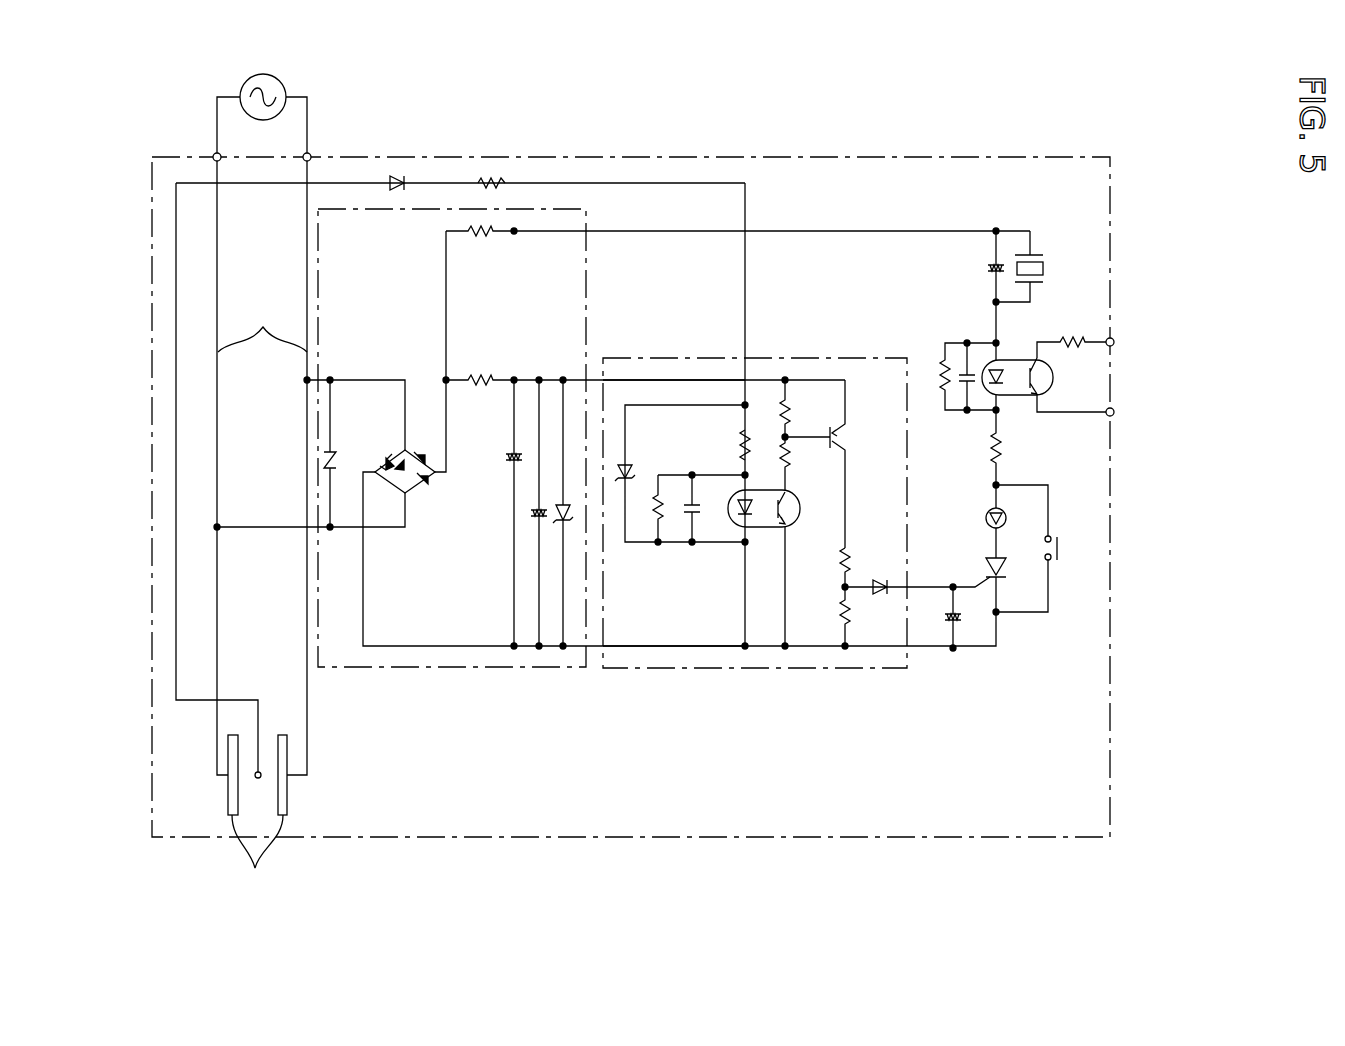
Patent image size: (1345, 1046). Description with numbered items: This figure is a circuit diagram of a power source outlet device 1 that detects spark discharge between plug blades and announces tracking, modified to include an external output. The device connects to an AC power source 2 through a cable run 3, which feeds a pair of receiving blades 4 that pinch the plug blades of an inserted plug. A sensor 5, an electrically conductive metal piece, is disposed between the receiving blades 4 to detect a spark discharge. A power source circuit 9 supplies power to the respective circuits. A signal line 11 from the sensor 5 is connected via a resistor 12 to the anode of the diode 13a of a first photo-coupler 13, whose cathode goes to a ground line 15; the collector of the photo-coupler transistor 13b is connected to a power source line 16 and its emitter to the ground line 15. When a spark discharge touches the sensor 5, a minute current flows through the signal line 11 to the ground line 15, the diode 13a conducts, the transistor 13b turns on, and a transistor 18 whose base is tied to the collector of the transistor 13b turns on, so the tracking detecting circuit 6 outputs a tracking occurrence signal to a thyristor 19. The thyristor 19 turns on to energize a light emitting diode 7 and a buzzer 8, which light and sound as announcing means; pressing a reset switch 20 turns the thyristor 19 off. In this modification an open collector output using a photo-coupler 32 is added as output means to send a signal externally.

The power source outlet device 1 is at (800, 157).
The AC power source 2 is at (243, 85).
The cable run 3 is at (262, 320).
The receiving blades 4 is at (257, 819).
The sensor 5 is at (261, 776).
The tracking detecting circuit 6 is at (718, 670).
The light emitting diode 7 is at (1006, 518).
The buzzer 8 is at (1043, 268).
The power source circuit 9 is at (402, 688).
The signal line 11 is at (176, 412).
The resistor 12 is at (493, 172).
The photo-coupler 13 is at (754, 621).
The diode 13a is at (738, 509).
The transistor 13b is at (787, 512).
The ground line 15 is at (646, 668).
The power source line 16 is at (665, 381).
The transistor 18 is at (843, 437).
The thyristor 19 is at (1002, 570).
The reset switch 20 is at (1060, 548).
The photo-coupler 32 is at (1053, 372).